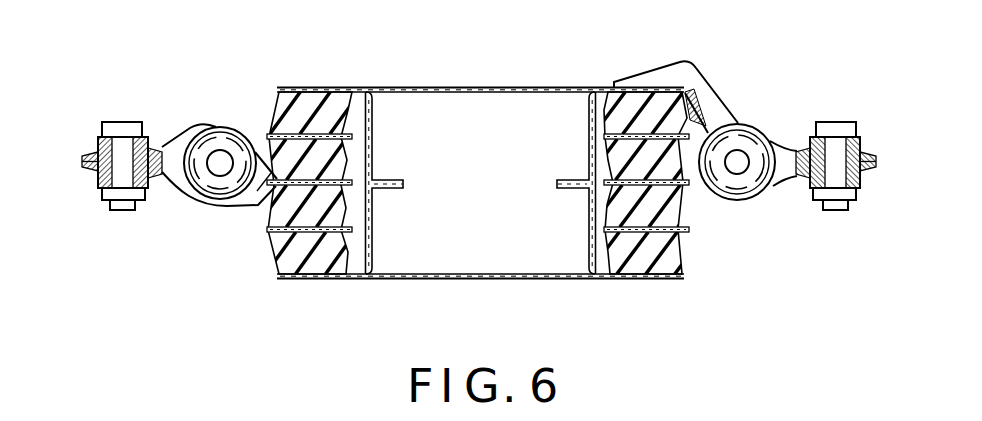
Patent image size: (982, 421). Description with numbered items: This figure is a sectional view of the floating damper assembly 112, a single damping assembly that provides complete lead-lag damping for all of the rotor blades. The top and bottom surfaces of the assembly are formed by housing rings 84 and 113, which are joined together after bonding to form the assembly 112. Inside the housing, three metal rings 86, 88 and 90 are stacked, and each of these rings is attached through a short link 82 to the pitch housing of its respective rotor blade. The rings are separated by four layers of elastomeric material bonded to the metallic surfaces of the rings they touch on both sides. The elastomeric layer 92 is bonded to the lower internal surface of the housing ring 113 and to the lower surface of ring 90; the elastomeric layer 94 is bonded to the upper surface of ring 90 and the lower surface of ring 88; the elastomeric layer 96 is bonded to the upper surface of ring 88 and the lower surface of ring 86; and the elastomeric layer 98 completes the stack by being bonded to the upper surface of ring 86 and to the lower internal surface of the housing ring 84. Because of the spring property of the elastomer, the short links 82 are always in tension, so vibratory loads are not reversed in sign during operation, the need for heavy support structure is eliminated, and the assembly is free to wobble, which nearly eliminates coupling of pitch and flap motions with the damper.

The short link 82 is at (160, 150).
The ring 84 is at (308, 87).
The ring 86 is at (338, 128).
The ring 88 is at (334, 188).
The ring 90 is at (325, 190).
The elastomeric layer 92 is at (651, 208).
The elastomeric layer 94 is at (657, 208).
The elastomeric layer 96 is at (692, 106).
The elastomeric layer 98 is at (630, 103).
The floating damper assembly 112 is at (480, 174).
The ring 113 is at (322, 279).